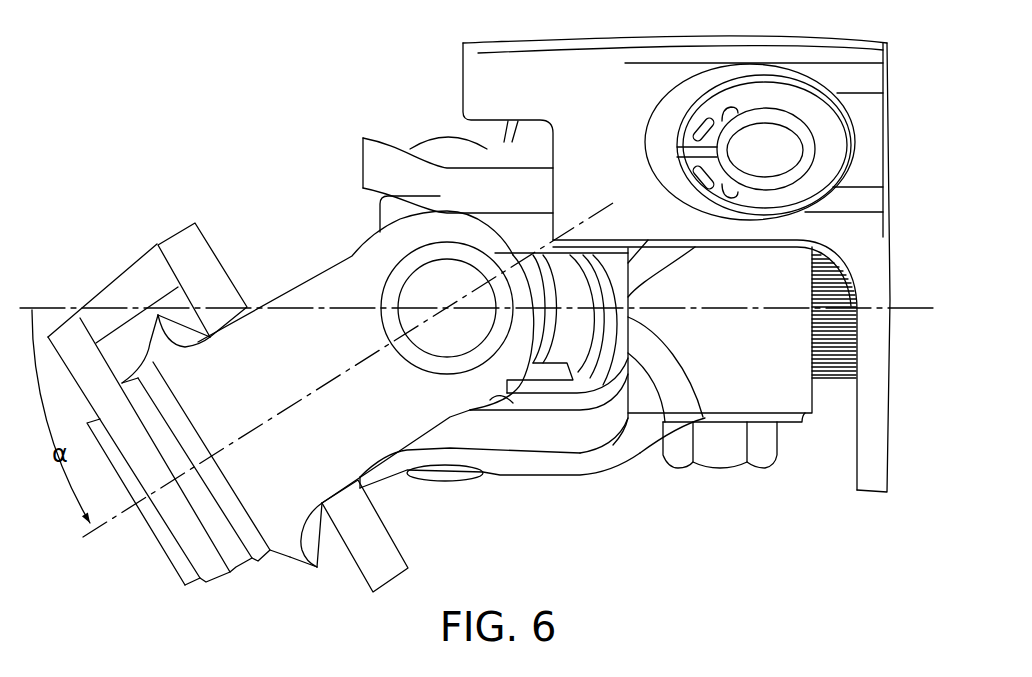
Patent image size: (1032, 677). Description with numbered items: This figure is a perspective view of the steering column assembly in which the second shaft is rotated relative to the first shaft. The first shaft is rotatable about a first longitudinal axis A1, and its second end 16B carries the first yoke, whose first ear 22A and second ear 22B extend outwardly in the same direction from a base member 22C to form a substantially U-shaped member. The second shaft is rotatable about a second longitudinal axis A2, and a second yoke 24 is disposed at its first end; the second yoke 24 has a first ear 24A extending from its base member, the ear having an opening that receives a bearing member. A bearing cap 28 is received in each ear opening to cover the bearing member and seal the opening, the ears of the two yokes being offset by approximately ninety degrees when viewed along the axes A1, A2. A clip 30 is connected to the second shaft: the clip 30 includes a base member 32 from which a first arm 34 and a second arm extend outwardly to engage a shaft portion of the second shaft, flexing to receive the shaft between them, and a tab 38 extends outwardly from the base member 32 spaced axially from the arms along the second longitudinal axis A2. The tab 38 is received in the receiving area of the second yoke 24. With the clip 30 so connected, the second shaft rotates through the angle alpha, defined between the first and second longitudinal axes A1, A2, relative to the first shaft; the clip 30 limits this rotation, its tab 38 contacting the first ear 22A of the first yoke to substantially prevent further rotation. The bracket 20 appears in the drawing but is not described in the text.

The bracket 20 is at (388, 103).
The first ear 22A is at (520, 476).
The second ear 22B is at (363, 163).
The base member 22C is at (768, 378).
The second yoke 24 is at (307, 284).
The first ear 24A is at (411, 446).
The bearing cap 28 is at (435, 137).
The clip 30 is at (142, 272).
The base member 32 is at (115, 290).
The first arm 34 is at (216, 586).
The tab 38 is at (212, 243).
The second end 16B is at (576, 480).
The first longitudinal axis A1 is at (913, 307).
The second longitudinal axis A2 is at (265, 427).